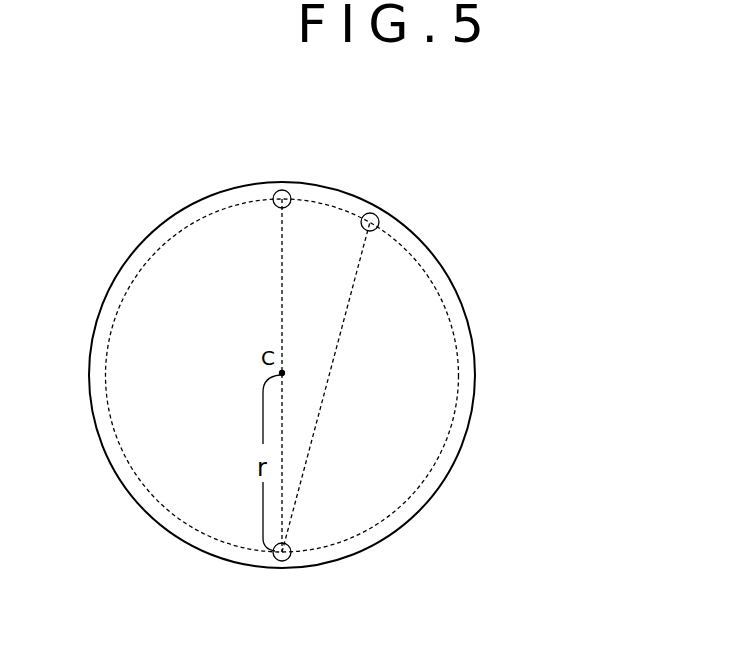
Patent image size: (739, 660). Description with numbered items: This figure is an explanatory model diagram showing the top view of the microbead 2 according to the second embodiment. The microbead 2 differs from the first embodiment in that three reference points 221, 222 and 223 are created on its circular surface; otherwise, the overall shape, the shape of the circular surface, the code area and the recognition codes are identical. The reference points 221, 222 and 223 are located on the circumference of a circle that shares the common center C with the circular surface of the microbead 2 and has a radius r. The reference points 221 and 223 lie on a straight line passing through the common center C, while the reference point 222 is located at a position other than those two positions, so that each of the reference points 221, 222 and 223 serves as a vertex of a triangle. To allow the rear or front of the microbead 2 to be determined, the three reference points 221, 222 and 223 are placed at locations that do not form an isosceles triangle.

The microbead 2 is at (465, 310).
The reference point 221 is at (282, 567).
The reference point 222 is at (371, 212).
The reference point 223 is at (283, 189).